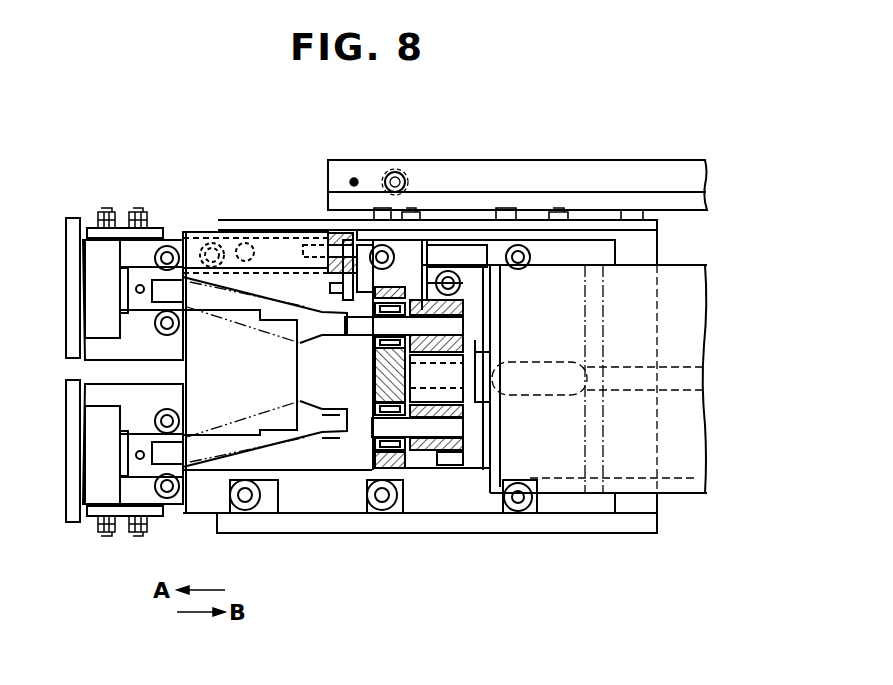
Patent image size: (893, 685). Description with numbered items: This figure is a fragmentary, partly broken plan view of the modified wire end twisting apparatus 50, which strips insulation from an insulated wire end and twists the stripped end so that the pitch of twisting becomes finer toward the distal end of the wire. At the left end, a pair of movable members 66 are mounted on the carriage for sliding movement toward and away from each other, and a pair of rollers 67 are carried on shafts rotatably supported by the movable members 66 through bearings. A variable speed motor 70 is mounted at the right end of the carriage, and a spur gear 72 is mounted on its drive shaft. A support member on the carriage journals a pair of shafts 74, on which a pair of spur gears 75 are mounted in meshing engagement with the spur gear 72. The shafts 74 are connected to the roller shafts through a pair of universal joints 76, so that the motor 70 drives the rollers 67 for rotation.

The wire end twisting apparatus 50 is at (537, 150).
The movable members 66 is at (110, 252).
The rollers 67 is at (73, 220).
The variable speed motor 70 is at (692, 310).
The spur gear 72 is at (418, 391).
The shafts 74 is at (433, 327).
The spur gears 75 is at (463, 308).
The universal joints 76 is at (228, 297).